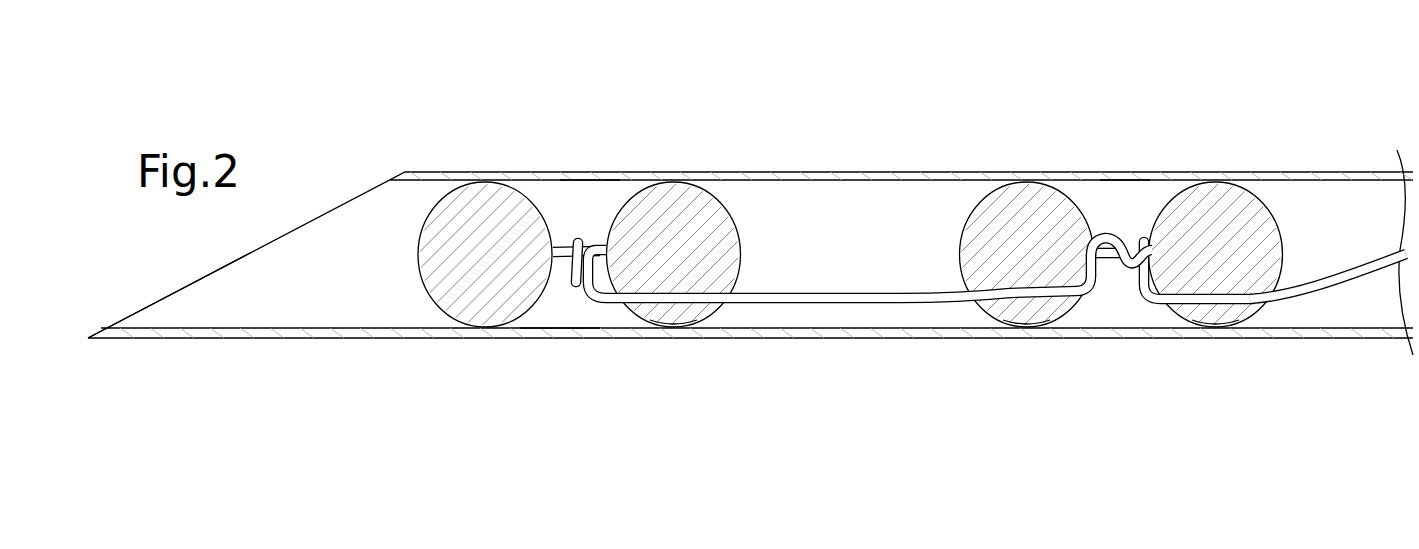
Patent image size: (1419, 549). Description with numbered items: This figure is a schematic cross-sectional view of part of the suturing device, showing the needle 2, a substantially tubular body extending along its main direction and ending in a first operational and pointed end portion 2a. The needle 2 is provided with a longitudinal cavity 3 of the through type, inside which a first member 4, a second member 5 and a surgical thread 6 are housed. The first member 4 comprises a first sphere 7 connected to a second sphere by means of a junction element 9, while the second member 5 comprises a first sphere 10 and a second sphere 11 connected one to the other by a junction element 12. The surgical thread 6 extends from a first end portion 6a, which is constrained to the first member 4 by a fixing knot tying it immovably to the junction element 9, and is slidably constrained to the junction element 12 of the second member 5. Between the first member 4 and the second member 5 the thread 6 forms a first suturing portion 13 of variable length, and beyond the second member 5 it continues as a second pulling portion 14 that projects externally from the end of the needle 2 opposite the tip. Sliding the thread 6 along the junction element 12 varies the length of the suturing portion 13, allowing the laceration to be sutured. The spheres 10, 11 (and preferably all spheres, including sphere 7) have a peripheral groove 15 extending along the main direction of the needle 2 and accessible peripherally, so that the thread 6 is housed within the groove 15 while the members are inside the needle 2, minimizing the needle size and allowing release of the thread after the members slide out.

The needle 2 is at (740, 347).
The first operational and pointed end portion 2a is at (202, 302).
The longitudinal cavity 3 is at (588, 200).
The first member 4 is at (558, 306).
The second member 5 is at (1126, 214).
The surgical thread 6 is at (902, 304).
The first end portion of the surgical thread 6a is at (573, 240).
The first sphere of the first member 7 is at (478, 227).
The junction element of the first member 9 is at (603, 237).
The first sphere of the second member 10 is at (1012, 220).
The second sphere of the second member 11 is at (1223, 228).
The junction element of the second member 12 is at (1098, 258).
The first suturing portion 13 is at (827, 300).
The second pulling portion 14 is at (1353, 278).
The peripheral groove 15 is at (670, 315).